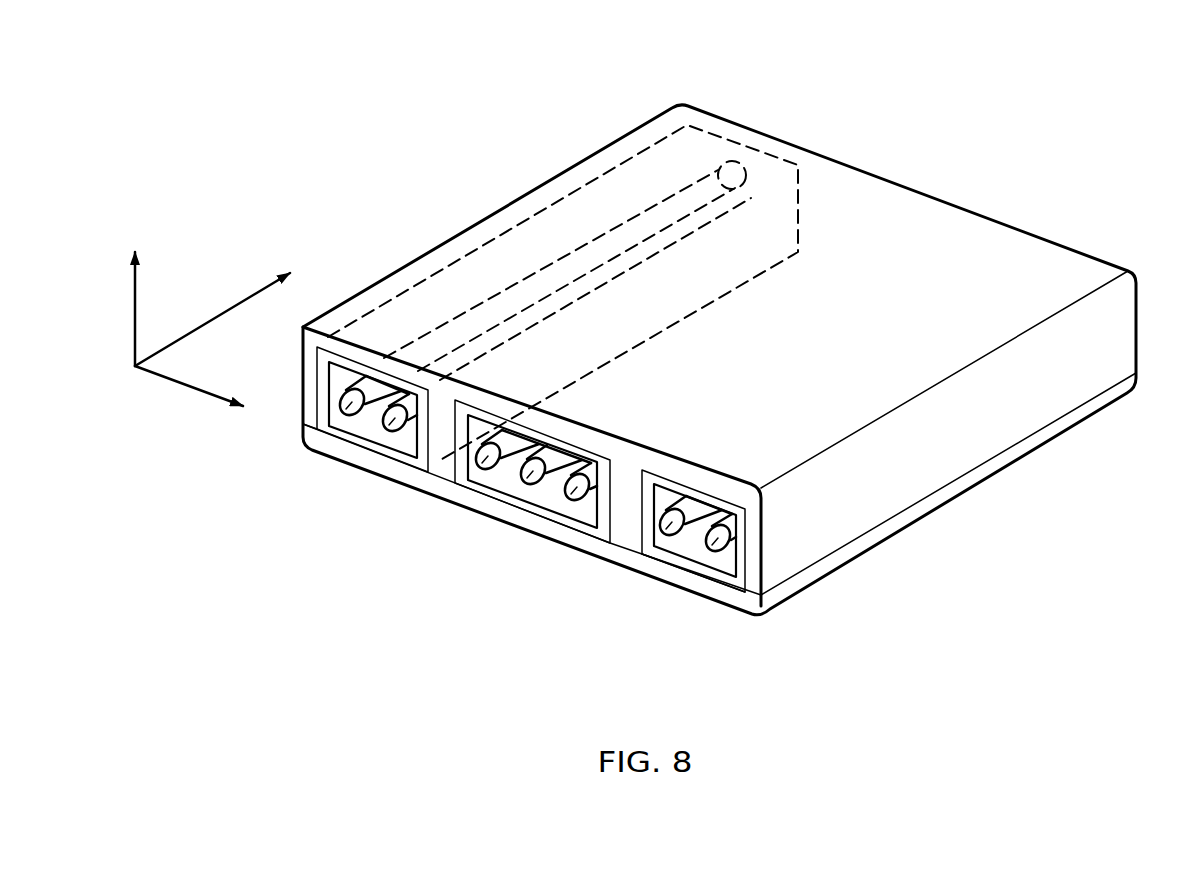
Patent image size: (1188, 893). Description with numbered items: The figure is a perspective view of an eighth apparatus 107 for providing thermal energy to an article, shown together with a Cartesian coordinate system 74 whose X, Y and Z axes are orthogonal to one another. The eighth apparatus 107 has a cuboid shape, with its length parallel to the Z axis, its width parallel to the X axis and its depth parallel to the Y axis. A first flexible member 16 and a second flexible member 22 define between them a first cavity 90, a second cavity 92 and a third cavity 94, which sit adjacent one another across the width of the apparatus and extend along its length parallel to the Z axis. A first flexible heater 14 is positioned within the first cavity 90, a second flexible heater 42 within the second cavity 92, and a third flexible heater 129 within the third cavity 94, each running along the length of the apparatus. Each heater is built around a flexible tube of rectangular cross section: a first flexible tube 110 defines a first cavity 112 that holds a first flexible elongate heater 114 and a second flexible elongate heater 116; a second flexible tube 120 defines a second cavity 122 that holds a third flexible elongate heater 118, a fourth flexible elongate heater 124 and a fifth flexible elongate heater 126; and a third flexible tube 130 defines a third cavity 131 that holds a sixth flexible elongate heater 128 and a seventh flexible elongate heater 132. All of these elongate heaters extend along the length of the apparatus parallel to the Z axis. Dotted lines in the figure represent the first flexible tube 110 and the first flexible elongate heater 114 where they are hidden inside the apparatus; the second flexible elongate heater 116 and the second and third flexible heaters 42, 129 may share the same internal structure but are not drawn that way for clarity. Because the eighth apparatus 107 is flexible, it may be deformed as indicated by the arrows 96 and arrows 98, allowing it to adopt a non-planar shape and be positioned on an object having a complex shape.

The first flexible heater 14 is at (303, 556).
The first flexible member 16 is at (820, 572).
The second flexible member 22 is at (900, 208).
The second flexible heater 42 is at (430, 626).
The Cartesian coordinate system 74 is at (198, 232).
The first cavity 90 is at (328, 438).
The second cavity 92 is at (462, 492).
The third cavity 94 is at (693, 577).
The arrows 96 is at (655, 117).
The arrows 98 is at (783, 80).
The eighth apparatus 107 is at (320, 89).
The first flexible tube 110 is at (323, 407).
The first cavity 112 is at (333, 378).
The first flexible elongate heater 114 is at (345, 412).
The second flexible elongate heater 116 is at (385, 422).
The third flexible elongate heater 118 is at (466, 483).
The second flexible tube 120 is at (465, 462).
The second cavity 122 is at (490, 458).
The fourth flexible elongate heater 124 is at (528, 478).
The fifth flexible elongate heater 126 is at (575, 493).
The sixth flexible elongate heater 128 is at (665, 532).
The third flexible heater 129 is at (703, 612).
The third flexible tube 130 is at (686, 497).
The third cavity 131 is at (725, 565).
The seventh flexible elongate heater 132 is at (712, 512).